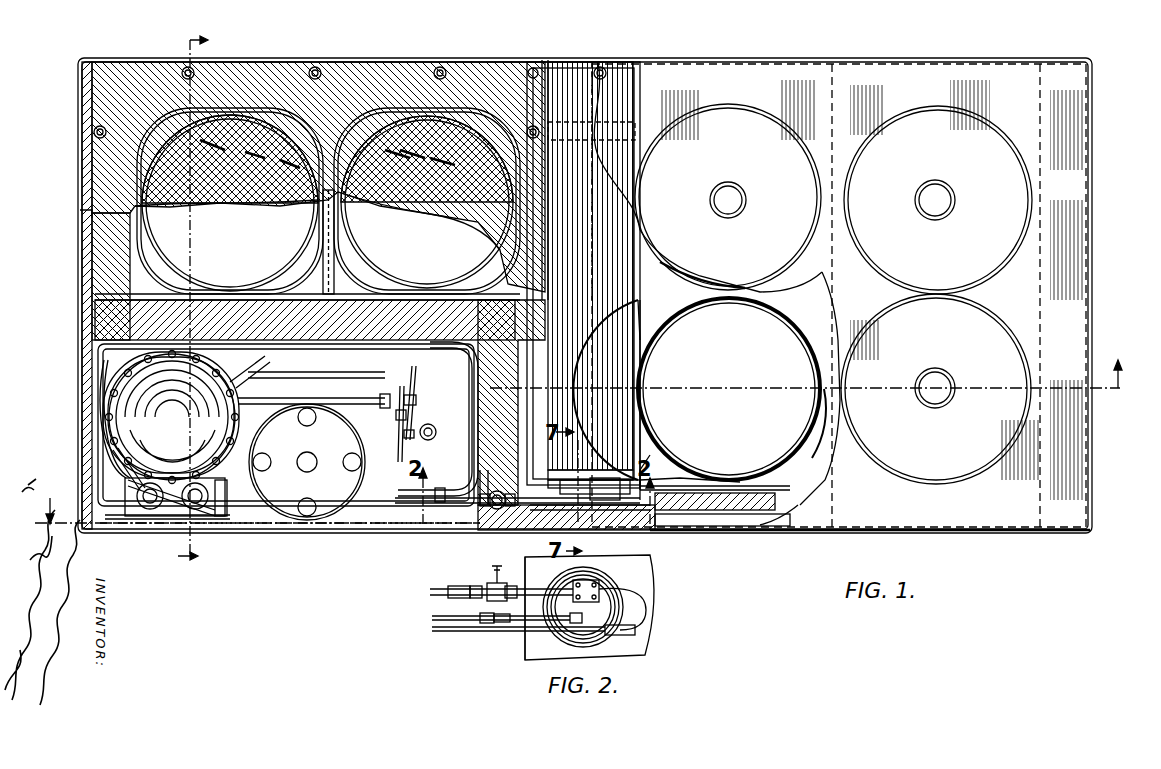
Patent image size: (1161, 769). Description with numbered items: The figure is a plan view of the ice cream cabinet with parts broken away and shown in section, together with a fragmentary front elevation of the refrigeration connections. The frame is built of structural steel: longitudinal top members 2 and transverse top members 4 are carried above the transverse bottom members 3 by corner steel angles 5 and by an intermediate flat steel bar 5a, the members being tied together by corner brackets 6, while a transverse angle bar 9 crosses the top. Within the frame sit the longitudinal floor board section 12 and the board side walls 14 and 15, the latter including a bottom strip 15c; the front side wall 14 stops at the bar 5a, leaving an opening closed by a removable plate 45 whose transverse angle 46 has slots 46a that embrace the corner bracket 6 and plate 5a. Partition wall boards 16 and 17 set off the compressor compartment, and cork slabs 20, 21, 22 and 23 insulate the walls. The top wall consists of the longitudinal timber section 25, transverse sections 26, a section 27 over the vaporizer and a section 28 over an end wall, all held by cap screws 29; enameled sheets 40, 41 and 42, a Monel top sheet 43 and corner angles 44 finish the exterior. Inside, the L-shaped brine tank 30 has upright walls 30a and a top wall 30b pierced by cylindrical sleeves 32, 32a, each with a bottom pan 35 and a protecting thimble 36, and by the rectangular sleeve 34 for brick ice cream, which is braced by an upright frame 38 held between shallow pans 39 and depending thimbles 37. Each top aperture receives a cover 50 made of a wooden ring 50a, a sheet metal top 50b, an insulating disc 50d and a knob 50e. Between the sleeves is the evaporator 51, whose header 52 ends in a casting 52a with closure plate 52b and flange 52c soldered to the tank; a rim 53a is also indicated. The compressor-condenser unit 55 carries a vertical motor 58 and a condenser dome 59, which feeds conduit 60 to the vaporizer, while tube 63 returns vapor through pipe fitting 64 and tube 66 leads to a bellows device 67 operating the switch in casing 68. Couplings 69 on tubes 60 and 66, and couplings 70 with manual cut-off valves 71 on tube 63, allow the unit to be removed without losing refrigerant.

In FIG. 1, the longitudinal top members 2 is at (148, 60).
In FIG. 1, the transverse top members 4 is at (92, 112).
In FIG. 1, the steel angles 5 is at (105, 556).
In FIG. 1, the flat steel bar 5a is at (484, 507).
In FIG. 1, the corner brackets 6 is at (118, 535).
In FIG. 1, the transverse angle bar 9 is at (542, 62).
In FIG. 1, the longitudinal floor board section 12 is at (380, 532).
In FIG. 1, the front side wall 14 is at (660, 532).
In FIG. 1, the side wall 15 is at (85, 270).
In FIG. 1, the bottom strip of side wall 15c is at (85, 400).
In FIG. 1, the partition wall board 16 is at (475, 450).
In FIG. 1, the partition wall boards 17 is at (98, 345).
In FIG. 1, the cork slab 20 is at (740, 530).
In FIG. 1, the cork slab 21 is at (85, 215).
In FIG. 1, the cork slab 22 is at (500, 470).
In FIG. 1, the cork slab 23 is at (95, 315).
In FIG. 1, the longitudinal timber section 25 is at (345, 62).
In FIG. 1, the transverse timber sections 26 is at (800, 64).
In FIG. 1, the transverse timber section 27 is at (575, 60).
In FIG. 1, the timber section 28 is at (1060, 64).
In FIG. 1, the cap screws 29 is at (600, 62).
In FIG. 1, the tank 30 is at (822, 455).
In FIG. 1, the upright walls of tank 30a is at (540, 345).
In FIG. 1, the top wall of tank 30b is at (780, 300).
In FIG. 1, the vertical sleeve 32 is at (688, 470).
In FIG. 1, the vertical sleeve 32a is at (736, 275).
In FIG. 1, the rectangular sleeve 34 is at (190, 290).
In FIG. 1, the sheet-metal pan 35 is at (650, 347).
In FIG. 1, the thimble 36 is at (650, 260).
In FIG. 1, the depending thimbles 37 is at (152, 262).
In FIG. 1, the upright rectangular frame 38 is at (323, 215).
In FIG. 1, the shallow pans 39 is at (240, 290).
In FIG. 1, the enameled steel sheet 40 is at (80, 238).
In FIG. 1, the enameled steel sheet 41 is at (282, 60).
In FIG. 1, the enameled steel sheet 42 is at (760, 532).
In FIG. 1, the Monel metal top sheet 43 is at (730, 64).
In FIG. 1, the corner angles 44 is at (84, 530).
In FIG. 1, the removable closure plate 45 is at (340, 530).
In FIG. 1, the transverse angle 46 is at (280, 530).
In FIG. 1, the slots 46a is at (460, 508).
In FIG. 1, the cover 50 is at (175, 130).
In FIG. 1, the wooden ring 50a is at (470, 104).
In FIG. 1, the sheet metal top 50b is at (1005, 478).
In FIG. 1, the heat-insulating disc 50d is at (430, 112).
In FIG. 1, the handle or knob 50e is at (742, 195).
In FIG. 1, the evaporator 51 is at (640, 310).
In FIG. 1, the header 52 is at (640, 300).
In FIG. 2, the header 52 is at (626, 578).
In FIG. 1, the apertured casting 52a is at (560, 472).
In FIG. 2, the apertured casting 52a is at (556, 648).
In FIG. 1, the removable closure plate 52b is at (612, 482).
In FIG. 2, the removable closure plate 52b is at (616, 622).
In FIG. 1, the flange 52c is at (650, 458).
In FIG. 1, the disc rim 53a is at (858, 152).
In FIG. 1, the compressor-condenser mechanism 55 is at (250, 520).
In FIG. 1, the motor 58 is at (362, 493).
In FIG. 1, the condenser dome 59 is at (118, 435).
In FIG. 1, the conduit 60 is at (402, 420).
In FIG. 2, the conduit 60 is at (432, 616).
In FIG. 1, the tube 63 is at (100, 370).
In FIG. 2, the tube 63 is at (432, 588).
In FIG. 1, the pipe fitting 64 is at (604, 500).
In FIG. 2, the pipe fitting 64 is at (576, 580).
In FIG. 1, the tube 66 is at (398, 440).
In FIG. 2, the tube 66 is at (465, 632).
In FIG. 1, the bellows-like device 67 is at (205, 518).
In FIG. 1, the switch casing 68 is at (160, 518).
In FIG. 1, the separable couplings 69 is at (425, 390).
In FIG. 2, the separable couplings 69 is at (490, 614).
In FIG. 1, the separable couplings 70 is at (438, 428).
In FIG. 2, the separable couplings 70 is at (475, 585).
In FIG. 1, the manual cut-off valves 71 is at (432, 440).
In FIG. 2, the manual cut-off valves 71 is at (505, 583).
In FIG. 1, the transverse bottom members 3 is at (578, 430).